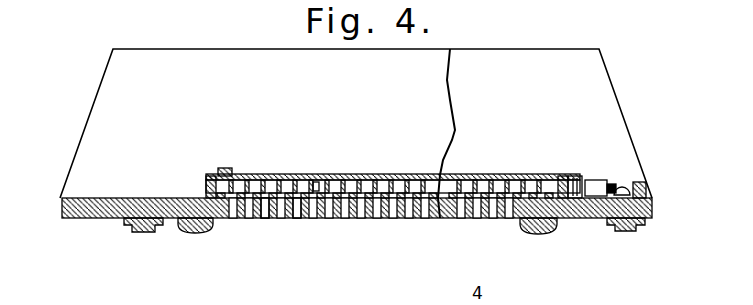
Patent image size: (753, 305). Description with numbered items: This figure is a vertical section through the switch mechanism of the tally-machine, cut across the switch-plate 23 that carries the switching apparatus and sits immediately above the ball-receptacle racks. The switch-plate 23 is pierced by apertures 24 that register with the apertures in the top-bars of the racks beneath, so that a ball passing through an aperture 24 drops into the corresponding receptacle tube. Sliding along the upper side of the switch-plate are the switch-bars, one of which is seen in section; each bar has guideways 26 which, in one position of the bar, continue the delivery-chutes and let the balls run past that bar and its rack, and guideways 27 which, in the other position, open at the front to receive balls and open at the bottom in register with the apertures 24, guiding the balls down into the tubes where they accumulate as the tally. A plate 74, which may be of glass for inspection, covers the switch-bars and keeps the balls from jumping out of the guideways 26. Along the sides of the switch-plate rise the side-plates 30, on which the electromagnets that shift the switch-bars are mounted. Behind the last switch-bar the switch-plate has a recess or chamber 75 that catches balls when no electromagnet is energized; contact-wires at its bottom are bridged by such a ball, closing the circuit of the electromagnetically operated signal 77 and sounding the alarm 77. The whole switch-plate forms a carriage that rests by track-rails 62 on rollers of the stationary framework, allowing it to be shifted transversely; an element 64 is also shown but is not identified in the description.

The switch-plate 23 is at (98, 218).
The apertures 24 is at (299, 220).
The side-plates 30 is at (598, 100).
The guideways 26 is at (297, 176).
The guideways 27 is at (318, 174).
The plate 74 is at (393, 174).
The recess or chamber 75 is at (549, 176).
The electromagnetically operated signal 77 is at (609, 179).
The track-rails 62 is at (205, 233).
The fastener 64 is at (148, 232).